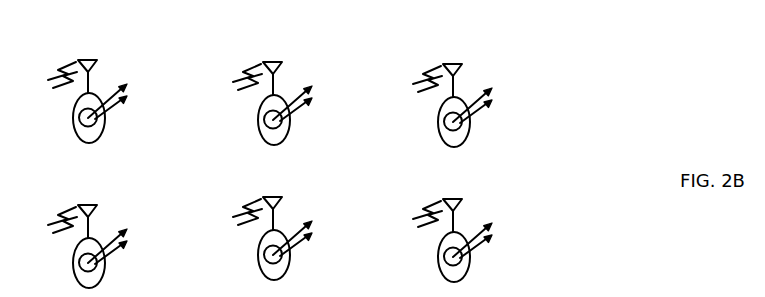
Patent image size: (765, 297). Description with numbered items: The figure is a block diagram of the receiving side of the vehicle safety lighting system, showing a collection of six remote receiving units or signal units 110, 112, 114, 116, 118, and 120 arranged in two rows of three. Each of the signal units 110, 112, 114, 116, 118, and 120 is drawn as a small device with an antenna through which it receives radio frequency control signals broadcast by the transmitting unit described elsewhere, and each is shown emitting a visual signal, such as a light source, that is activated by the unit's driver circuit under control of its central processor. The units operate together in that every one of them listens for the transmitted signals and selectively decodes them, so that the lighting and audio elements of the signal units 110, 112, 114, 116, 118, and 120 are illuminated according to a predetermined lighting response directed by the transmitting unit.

The remote receiving unit 110 is at (115, 133).
The remote receiving unit 112 is at (115, 262).
The remote receiving unit 114 is at (300, 118).
The remote receiving unit 116 is at (300, 257).
The remote receiving unit 118 is at (480, 120).
The remote receiving unit 120 is at (480, 260).